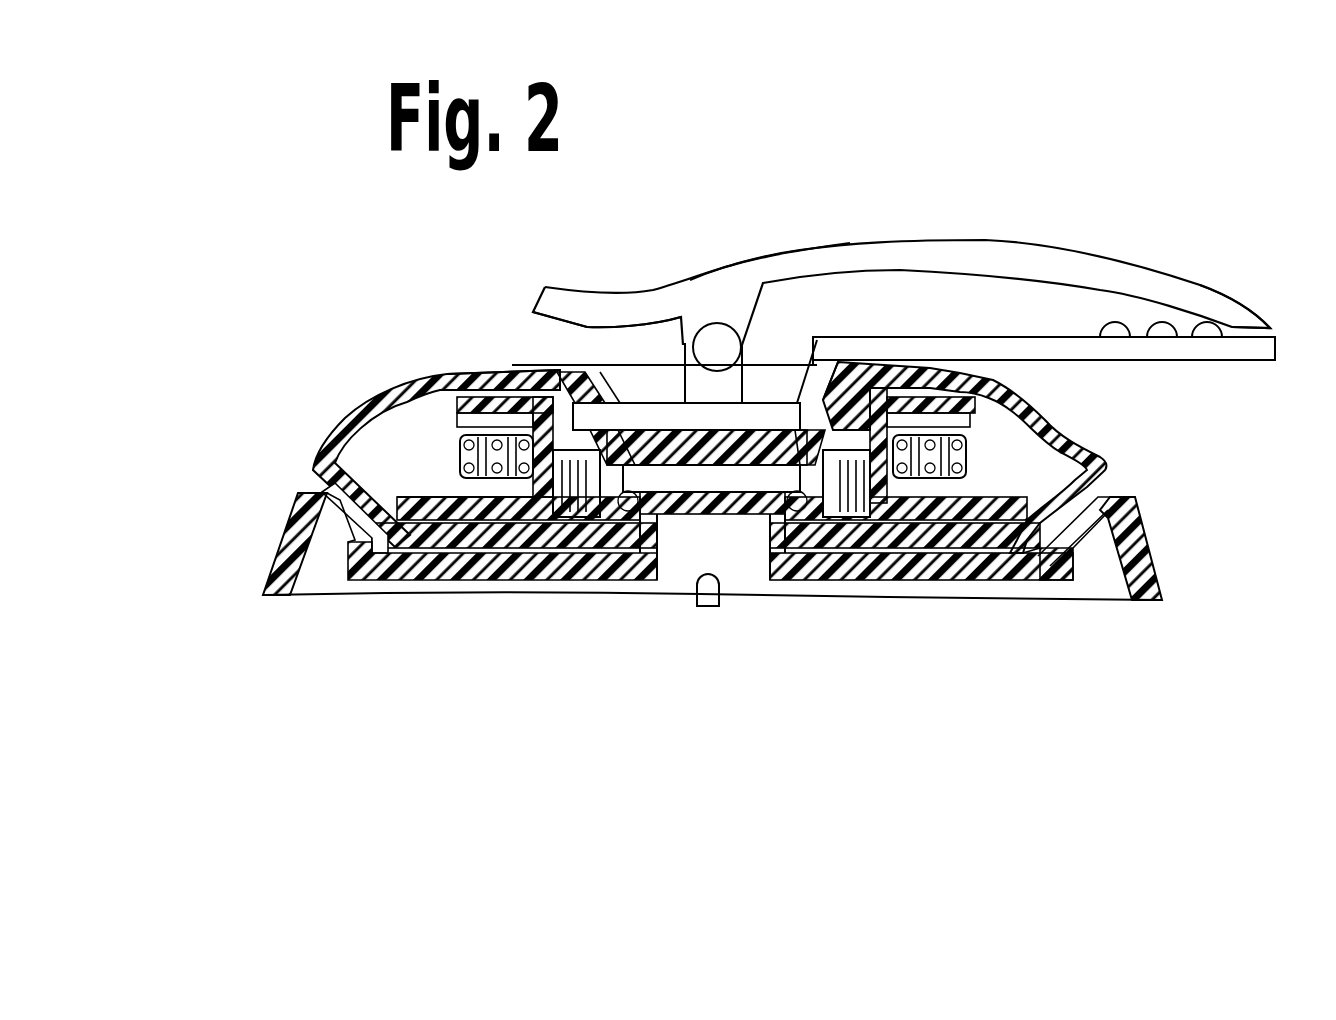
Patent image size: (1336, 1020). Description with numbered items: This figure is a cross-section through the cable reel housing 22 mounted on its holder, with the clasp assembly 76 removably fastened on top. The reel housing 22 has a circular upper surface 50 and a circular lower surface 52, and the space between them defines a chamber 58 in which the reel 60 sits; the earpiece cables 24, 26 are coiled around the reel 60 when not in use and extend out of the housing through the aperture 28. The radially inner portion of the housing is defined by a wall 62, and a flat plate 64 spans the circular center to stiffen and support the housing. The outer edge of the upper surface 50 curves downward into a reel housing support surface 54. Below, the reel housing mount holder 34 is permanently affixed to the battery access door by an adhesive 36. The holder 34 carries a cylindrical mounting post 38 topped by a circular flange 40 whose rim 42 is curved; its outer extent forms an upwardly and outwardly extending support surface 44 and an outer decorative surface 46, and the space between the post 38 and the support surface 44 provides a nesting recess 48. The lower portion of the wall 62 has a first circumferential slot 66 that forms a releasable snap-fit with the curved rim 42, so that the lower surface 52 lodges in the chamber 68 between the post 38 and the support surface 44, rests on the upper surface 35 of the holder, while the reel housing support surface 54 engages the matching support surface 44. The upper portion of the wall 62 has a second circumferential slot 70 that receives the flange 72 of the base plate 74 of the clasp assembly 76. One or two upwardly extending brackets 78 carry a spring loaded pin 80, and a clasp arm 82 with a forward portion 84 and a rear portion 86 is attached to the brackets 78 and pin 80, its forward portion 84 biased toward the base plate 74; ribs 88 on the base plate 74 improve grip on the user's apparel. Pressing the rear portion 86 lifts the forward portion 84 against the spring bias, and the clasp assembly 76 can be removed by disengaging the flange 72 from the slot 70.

The cable reel housing 22 is at (455, 362).
The earpiece cable 24 is at (412, 395).
The earpiece cable 26 is at (457, 440).
The aperture 28 is at (1068, 430).
The reel housing mount holder 34 is at (562, 570).
The upper surface 35 is at (1003, 560).
The adhesive 36 is at (690, 555).
The mounting post 38 is at (768, 555).
The flange 40 is at (750, 515).
The rim 42 is at (843, 520).
The support surface 44 is at (1085, 503).
The outer decorative surface 46 is at (1153, 547).
The nesting recess 48 is at (1035, 558).
The upper surface 50 is at (473, 368).
The lower surface 52 is at (477, 548).
The reel housing support surface 54 is at (335, 527).
The chamber 58 is at (426, 478).
The reel 60 is at (433, 370).
The wall 62 is at (555, 560).
The flat plate 64 is at (661, 455).
The first circumferential slot 66 is at (661, 520).
The chamber 68 is at (888, 572).
The second circumferential slot 70 is at (613, 400).
The flange 72 is at (862, 372).
The base plate 74 is at (997, 337).
The clasp assembly 76 is at (1025, 238).
The bracket 78 is at (733, 397).
The spring loaded pin 80 is at (722, 330).
The clasp arm 82 is at (730, 262).
The forward portion 84 is at (1245, 305).
The rear portion 86 is at (578, 292).
The ribs 88 is at (1113, 335).